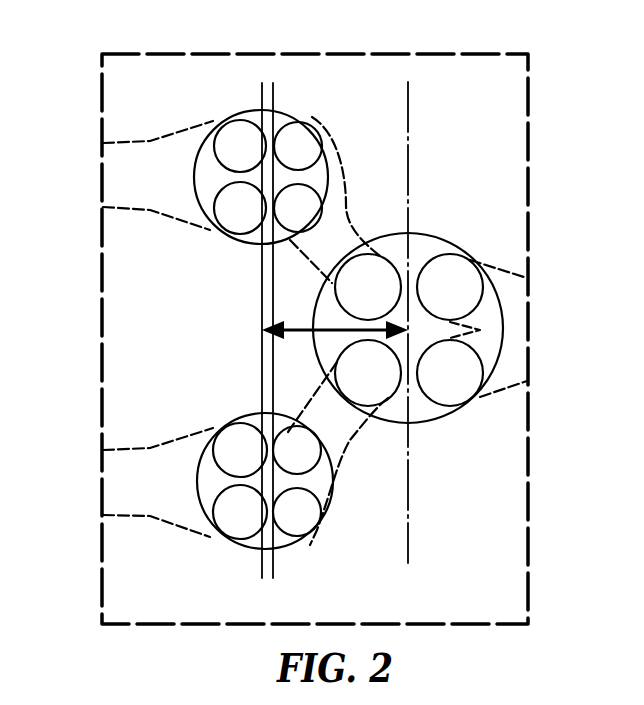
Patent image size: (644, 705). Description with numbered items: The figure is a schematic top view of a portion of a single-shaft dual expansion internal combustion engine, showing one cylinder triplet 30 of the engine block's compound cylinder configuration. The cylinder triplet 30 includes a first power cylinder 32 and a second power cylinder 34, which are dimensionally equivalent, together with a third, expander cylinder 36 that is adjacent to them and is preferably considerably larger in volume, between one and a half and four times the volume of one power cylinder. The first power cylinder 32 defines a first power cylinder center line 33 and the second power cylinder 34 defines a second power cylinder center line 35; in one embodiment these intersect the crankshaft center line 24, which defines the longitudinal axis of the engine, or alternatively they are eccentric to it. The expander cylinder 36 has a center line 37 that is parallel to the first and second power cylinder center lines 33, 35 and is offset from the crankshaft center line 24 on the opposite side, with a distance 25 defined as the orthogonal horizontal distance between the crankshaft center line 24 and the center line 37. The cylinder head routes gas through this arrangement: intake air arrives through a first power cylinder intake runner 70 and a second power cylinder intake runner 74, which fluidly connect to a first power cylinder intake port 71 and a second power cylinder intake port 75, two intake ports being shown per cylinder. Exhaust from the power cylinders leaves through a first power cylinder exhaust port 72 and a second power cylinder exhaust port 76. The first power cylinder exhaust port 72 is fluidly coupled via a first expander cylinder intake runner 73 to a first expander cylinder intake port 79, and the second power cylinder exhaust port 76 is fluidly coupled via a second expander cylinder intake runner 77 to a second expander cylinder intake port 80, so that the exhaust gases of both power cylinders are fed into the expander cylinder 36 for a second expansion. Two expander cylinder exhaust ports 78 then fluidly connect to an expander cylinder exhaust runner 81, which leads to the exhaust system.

The crankshaft center line 24 is at (258, 100).
The distance 25 is at (258, 342).
The cylinder triplet 30 is at (480, 89).
The first power cylinder 32 is at (222, 122).
The first power cylinder center line 33 is at (277, 100).
The second power cylinder 34 is at (221, 423).
The second power cylinder center line 35 is at (276, 562).
The expander cylinder 36 is at (448, 240).
The center line of the expander cylinder 37 is at (408, 157).
The first power cylinder intake runner 70 is at (137, 180).
The first power cylinder intake port 71 is at (230, 150).
The first power cylinder exhaust port 72 is at (297, 208).
The first expander cylinder intake runner 73 is at (330, 254).
The second power cylinder intake runner 74 is at (137, 489).
The second power cylinder intake port 75 is at (230, 510).
The second power cylinder exhaust port 76 is at (300, 456).
The second expander cylinder intake runner 77 is at (330, 413).
The expander cylinder exhaust port 78 is at (453, 290).
The first expander cylinder intake port 79 is at (368, 286).
The second expander cylinder intake port 80 is at (375, 380).
The expander cylinder exhaust runner 81 is at (513, 293).